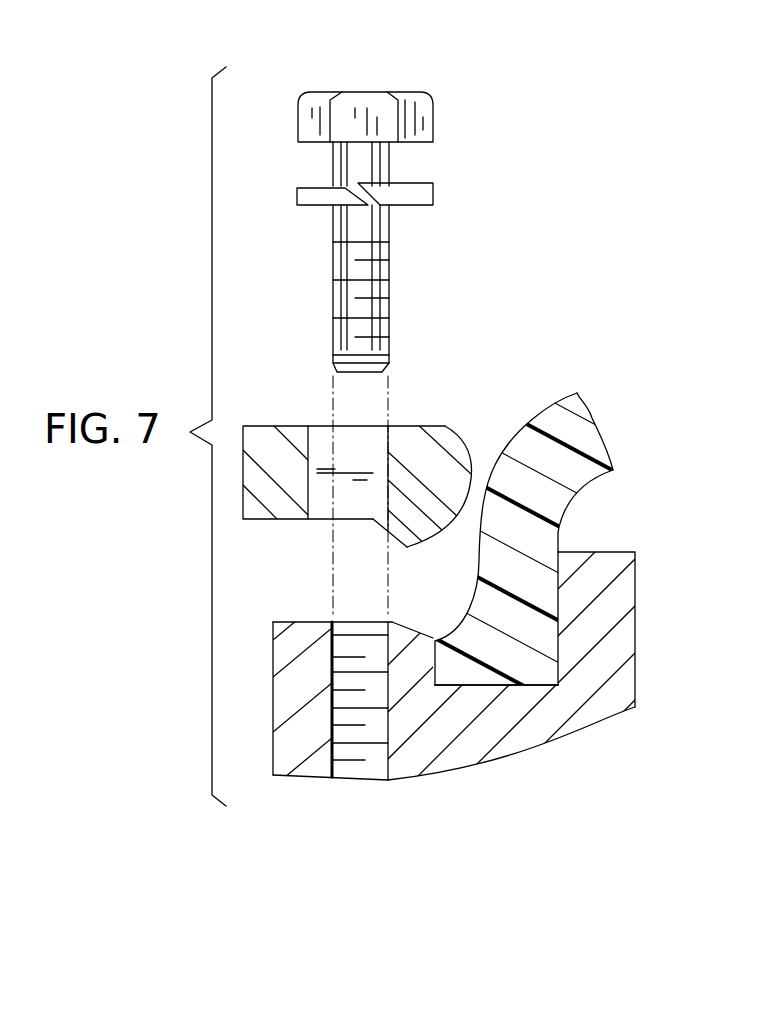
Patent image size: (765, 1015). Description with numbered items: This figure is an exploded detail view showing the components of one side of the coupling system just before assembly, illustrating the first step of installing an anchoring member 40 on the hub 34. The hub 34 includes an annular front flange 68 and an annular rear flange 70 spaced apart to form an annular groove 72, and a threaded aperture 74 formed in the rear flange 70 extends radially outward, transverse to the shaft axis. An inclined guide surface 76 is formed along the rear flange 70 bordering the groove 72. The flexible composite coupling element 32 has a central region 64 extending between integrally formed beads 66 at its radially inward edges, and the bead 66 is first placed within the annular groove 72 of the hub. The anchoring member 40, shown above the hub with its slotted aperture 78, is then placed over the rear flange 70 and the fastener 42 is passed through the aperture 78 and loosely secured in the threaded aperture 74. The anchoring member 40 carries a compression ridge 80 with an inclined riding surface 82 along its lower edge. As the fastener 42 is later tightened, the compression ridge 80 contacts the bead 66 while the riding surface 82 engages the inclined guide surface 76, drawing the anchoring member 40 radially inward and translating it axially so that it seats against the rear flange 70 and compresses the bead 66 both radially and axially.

The coupling element 32 is at (587, 482).
The hub 34 is at (458, 780).
The anchoring member 40 is at (290, 427).
The fastener 42 is at (377, 110).
The central region 64 is at (587, 432).
The bead 66 is at (527, 662).
The front flange 68 is at (612, 602).
The rear flange 70 is at (288, 697).
The annular groove 72 is at (487, 690).
The threaded aperture 74 is at (370, 757).
The inclined guide surface 76 is at (404, 622).
The aperture 78 is at (372, 435).
The compression ridge 80 is at (470, 478).
The riding surface 82 is at (383, 528).